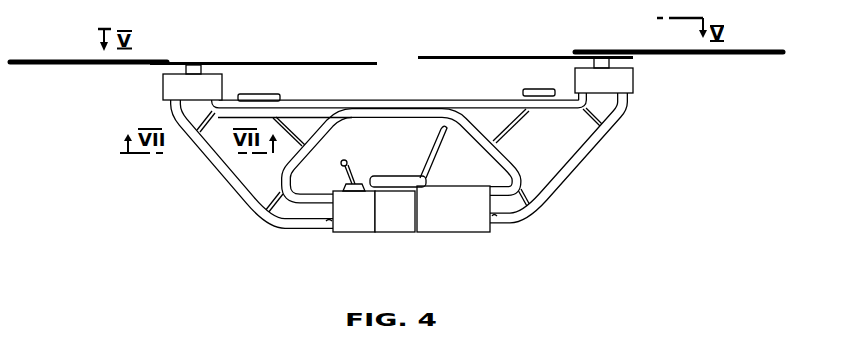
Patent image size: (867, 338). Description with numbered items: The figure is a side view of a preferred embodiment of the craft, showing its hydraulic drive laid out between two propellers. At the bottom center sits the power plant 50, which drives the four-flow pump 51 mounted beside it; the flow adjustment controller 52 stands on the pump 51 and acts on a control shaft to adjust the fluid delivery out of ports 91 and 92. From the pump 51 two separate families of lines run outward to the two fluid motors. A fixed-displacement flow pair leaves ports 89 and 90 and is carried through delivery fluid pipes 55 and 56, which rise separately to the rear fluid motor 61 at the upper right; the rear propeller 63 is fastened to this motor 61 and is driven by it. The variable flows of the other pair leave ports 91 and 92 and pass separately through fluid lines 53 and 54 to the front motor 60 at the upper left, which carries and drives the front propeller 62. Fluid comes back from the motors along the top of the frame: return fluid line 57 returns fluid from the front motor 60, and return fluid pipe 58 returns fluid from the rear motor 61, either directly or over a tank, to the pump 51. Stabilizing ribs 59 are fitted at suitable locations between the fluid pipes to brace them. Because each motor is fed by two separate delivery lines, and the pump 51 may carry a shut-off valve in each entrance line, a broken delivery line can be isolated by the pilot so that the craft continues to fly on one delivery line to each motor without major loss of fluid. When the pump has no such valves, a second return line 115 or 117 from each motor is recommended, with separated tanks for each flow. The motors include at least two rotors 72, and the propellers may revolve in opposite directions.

The power plant 50 is at (462, 221).
The four-flow pump 51 is at (406, 224).
The flow adjustment controller 52 is at (349, 162).
The fluid line 53 is at (255, 168).
The fluid line 54 is at (228, 166).
The delivery fluid pipe 55 is at (560, 155).
The delivery fluid pipe 56 is at (577, 160).
The return fluid line 57 is at (399, 89).
The return fluid pipe 58 is at (312, 100).
The stabilizing ribs 59 is at (317, 128).
The front motor 60 is at (172, 87).
The fluid motor 61 is at (636, 80).
The front propeller 62 is at (70, 66).
The rear propeller 63 is at (717, 53).
The rotors 72 is at (201, 65).
The port 89 is at (546, 231).
The port 90 is at (498, 221).
The port 91 is at (298, 243).
The port 92 is at (330, 221).
The second return line 115 is at (265, 94).
The second return line 117 is at (533, 88).